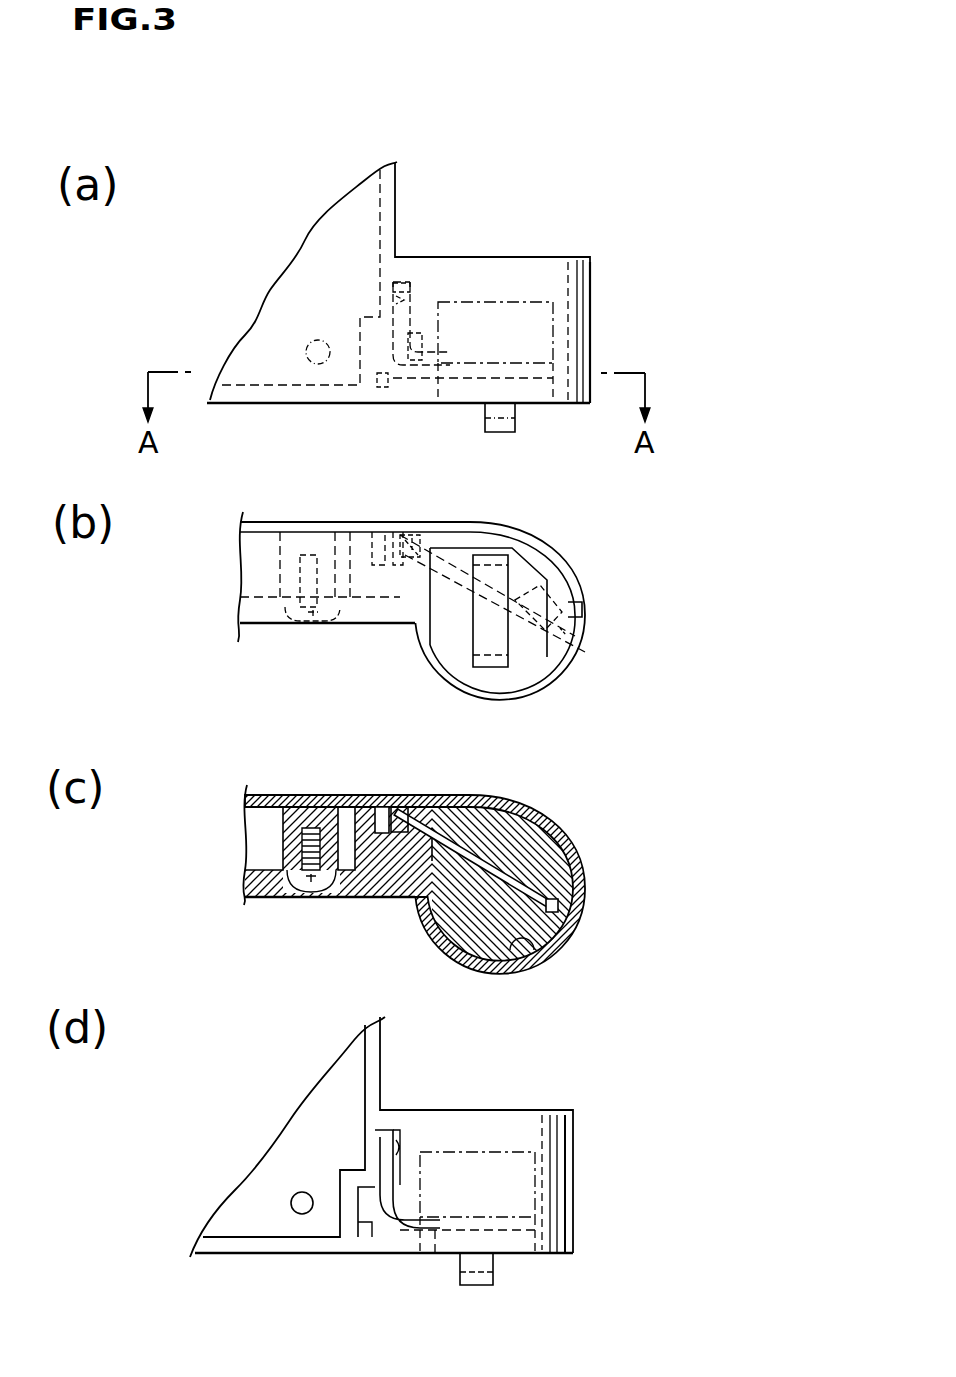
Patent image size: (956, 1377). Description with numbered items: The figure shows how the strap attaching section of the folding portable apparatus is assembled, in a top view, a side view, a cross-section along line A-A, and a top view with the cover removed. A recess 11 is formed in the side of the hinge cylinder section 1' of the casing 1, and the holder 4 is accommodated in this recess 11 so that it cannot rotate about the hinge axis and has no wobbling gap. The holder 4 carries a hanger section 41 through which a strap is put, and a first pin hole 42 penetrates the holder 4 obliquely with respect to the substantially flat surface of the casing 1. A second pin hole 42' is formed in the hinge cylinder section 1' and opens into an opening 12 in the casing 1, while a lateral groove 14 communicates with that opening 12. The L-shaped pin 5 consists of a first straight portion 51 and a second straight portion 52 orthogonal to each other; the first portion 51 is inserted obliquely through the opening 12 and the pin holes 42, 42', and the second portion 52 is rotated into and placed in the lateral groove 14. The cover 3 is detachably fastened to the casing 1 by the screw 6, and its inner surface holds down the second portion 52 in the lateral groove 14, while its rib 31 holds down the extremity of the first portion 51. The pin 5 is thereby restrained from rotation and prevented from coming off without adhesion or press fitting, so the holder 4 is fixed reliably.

The casing 1 is at (355, 735).
The hinge cylinder section 1' is at (485, 1089).
The cover 3 is at (538, 257).
The holder 4 is at (592, 300).
The L-shaped pin 5 is at (468, 376).
The screw 6 is at (298, 613).
The recess 11 is at (543, 958).
The opening 12 is at (381, 392).
The lateral groove 14 is at (392, 284).
The rib 31 is at (588, 864).
The hanger section 41 is at (482, 633).
The first pin hole 42 is at (579, 597).
The second pin hole 42' is at (451, 513).
The first straight portion 51 is at (593, 352).
The second straight portion 52 is at (425, 292).